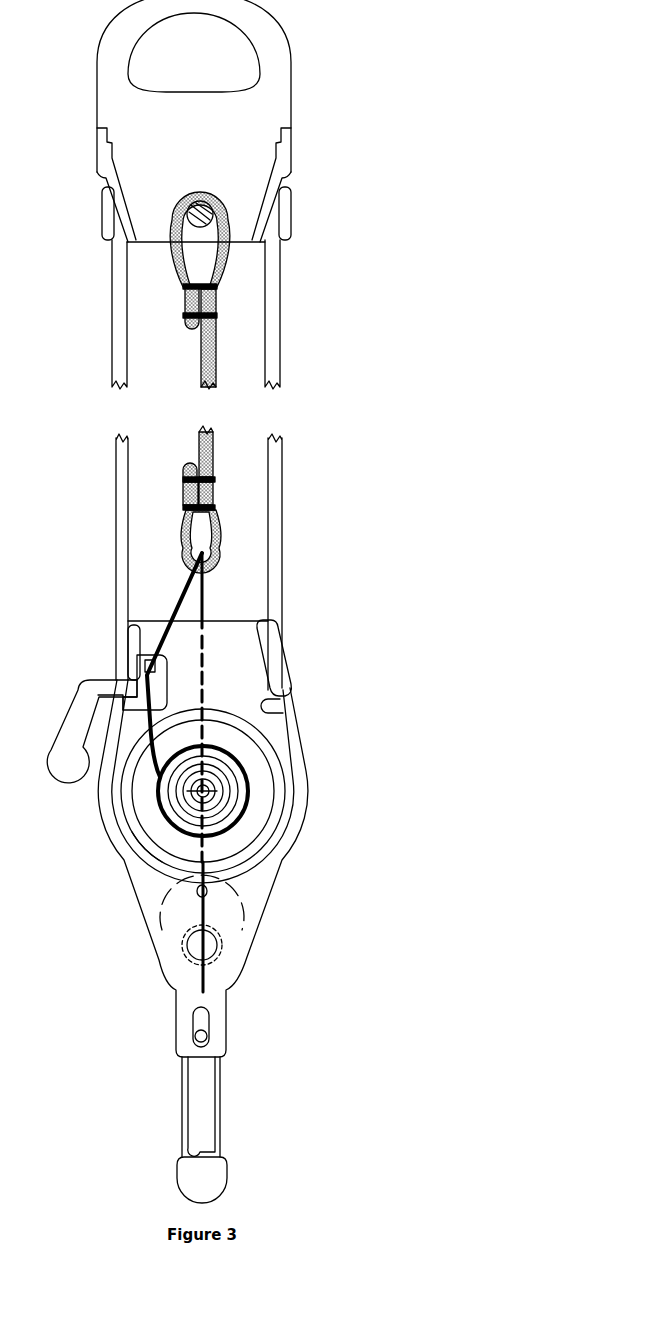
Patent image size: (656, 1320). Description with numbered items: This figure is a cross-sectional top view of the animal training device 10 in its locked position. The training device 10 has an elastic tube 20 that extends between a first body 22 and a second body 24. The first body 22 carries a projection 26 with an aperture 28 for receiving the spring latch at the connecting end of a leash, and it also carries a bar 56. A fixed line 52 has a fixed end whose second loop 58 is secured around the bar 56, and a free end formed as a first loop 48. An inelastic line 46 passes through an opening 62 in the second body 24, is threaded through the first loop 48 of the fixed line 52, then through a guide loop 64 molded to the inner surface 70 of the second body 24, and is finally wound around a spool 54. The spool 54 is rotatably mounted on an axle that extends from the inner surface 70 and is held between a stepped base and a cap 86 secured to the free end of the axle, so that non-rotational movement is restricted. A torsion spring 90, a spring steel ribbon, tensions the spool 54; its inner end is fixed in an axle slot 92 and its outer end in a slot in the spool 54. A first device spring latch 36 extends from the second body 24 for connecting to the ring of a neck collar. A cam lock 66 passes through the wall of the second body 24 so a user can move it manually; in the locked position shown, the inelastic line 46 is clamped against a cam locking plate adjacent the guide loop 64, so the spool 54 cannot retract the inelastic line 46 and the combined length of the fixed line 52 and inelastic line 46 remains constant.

The training device 10 is at (314, 412).
The elastic tube 20 is at (273, 328).
The first body 22 is at (277, 110).
The second body 24 is at (298, 755).
The projection 26 is at (228, 1).
The aperture 28 is at (217, 64).
The first device spring latch 36 is at (183, 1023).
The inelastic line 46 is at (203, 603).
The first loop 48 is at (187, 542).
The fixed line 52 is at (200, 375).
The spool 54 is at (133, 788).
The bar 56 is at (173, 212).
The second loop 58 is at (222, 247).
The opening 62 is at (240, 887).
The guide loop 64 is at (142, 662).
The cam lock 66 is at (93, 718).
The inner surface 70 is at (280, 699).
The cap 86 is at (222, 797).
The torsion spring 90 is at (123, 862).
The axle slot 92 is at (183, 792).